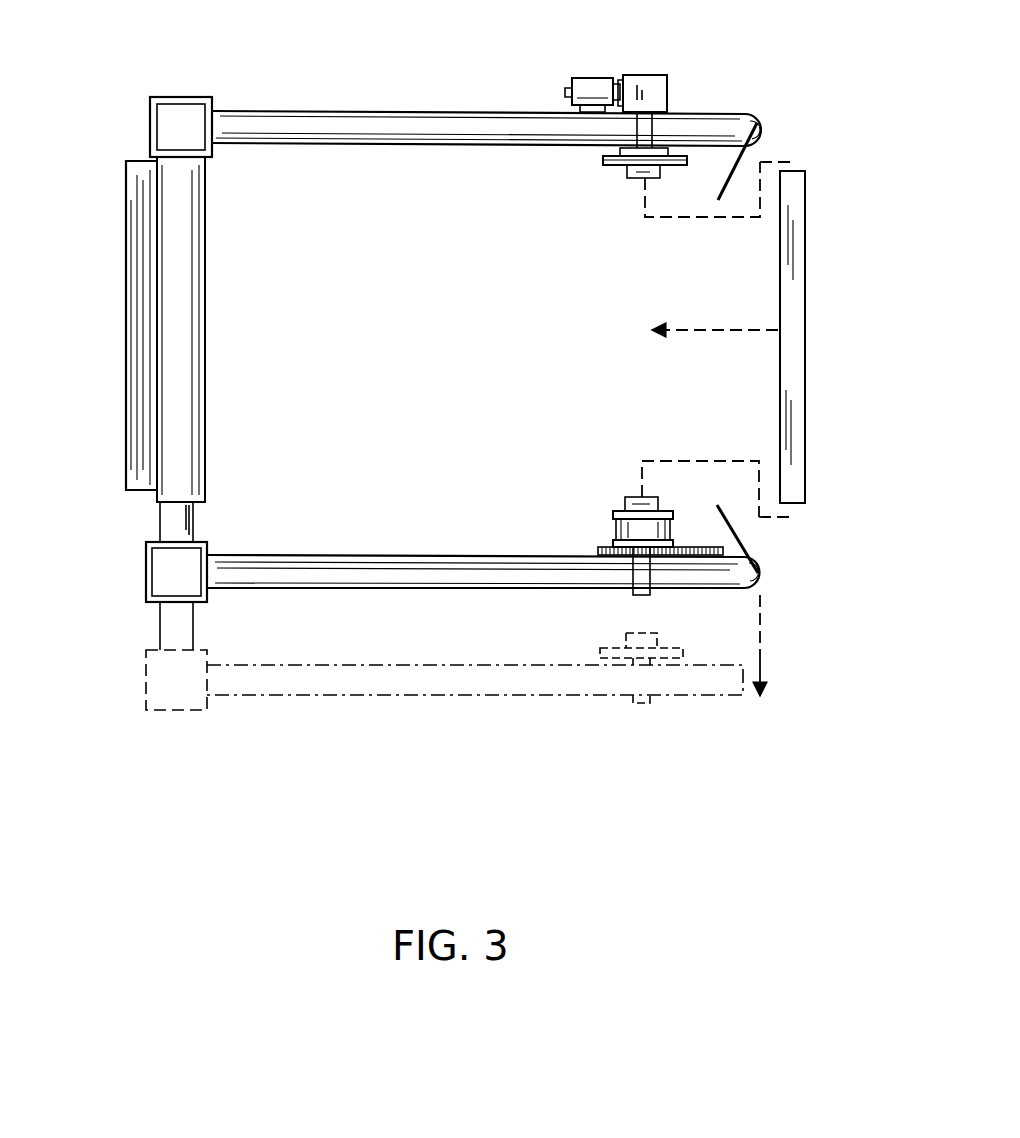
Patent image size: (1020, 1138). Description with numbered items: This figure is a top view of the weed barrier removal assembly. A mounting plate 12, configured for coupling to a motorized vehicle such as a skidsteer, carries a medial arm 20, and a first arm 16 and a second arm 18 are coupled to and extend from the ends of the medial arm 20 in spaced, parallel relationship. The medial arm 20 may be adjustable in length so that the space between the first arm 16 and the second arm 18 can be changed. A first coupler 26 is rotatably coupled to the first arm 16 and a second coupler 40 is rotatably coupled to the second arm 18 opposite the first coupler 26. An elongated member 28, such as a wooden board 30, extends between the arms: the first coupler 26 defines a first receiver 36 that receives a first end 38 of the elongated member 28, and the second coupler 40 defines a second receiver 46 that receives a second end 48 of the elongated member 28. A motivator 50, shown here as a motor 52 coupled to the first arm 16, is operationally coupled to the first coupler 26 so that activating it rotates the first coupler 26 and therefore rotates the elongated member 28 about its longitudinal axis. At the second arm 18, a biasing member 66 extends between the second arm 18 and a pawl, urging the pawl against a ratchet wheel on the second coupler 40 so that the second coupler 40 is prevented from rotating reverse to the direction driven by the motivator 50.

The mounting plate 12 is at (146, 310).
The first arm 16 is at (424, 122).
The second arm 18 is at (487, 577).
The medial arm 20 is at (172, 350).
The first coupler 26 is at (626, 187).
The elongated member 28 is at (798, 290).
The wooden board 30 is at (814, 322).
The first receiver 36 is at (655, 194).
The first end of the elongated member 38 is at (800, 171).
The second coupler 40 is at (615, 520).
The second receiver 46 is at (633, 490).
The second end of the elongated member 48 is at (792, 500).
The motivator 50 is at (644, 67).
The motor 52 is at (593, 88).
The biasing member 66 is at (693, 560).